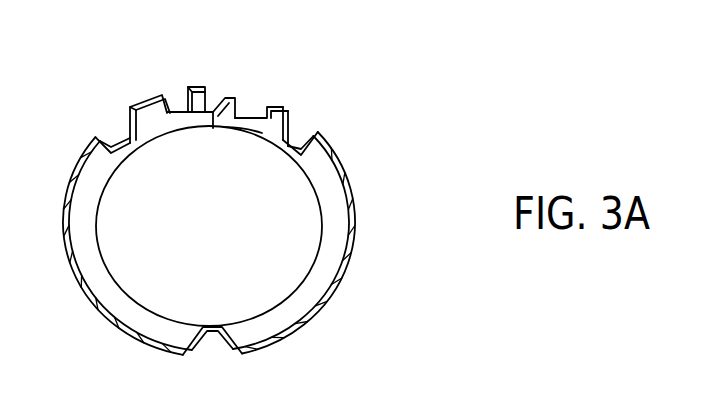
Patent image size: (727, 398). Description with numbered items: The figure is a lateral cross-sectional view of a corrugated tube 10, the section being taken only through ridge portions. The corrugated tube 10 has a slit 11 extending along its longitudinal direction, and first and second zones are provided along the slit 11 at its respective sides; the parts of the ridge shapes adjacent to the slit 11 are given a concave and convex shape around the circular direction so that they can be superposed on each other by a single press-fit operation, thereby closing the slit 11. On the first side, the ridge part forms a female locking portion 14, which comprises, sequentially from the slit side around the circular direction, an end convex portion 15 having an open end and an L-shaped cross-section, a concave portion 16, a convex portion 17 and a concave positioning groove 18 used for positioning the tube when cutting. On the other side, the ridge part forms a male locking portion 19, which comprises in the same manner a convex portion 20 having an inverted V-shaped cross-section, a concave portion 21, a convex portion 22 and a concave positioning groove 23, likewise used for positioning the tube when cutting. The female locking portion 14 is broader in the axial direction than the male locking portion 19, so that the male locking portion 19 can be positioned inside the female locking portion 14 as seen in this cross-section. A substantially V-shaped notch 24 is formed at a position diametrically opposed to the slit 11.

The corrugated tube 10 is at (251, 199).
The slit 11 is at (217, 96).
The female locking portion 14 is at (228, 199).
The end convex portion 15 is at (198, 88).
The concave portion 16 is at (178, 127).
The convex portion 17 is at (152, 98).
The concave positioning groove 18 is at (118, 133).
The male locking portion 19 is at (268, 92).
The convex portion 20 is at (244, 99).
The concave portion 21 is at (243, 129).
The convex portion 22 is at (285, 106).
The concave positioning groove 23 is at (296, 144).
The V-shaped notch 24 is at (206, 336).